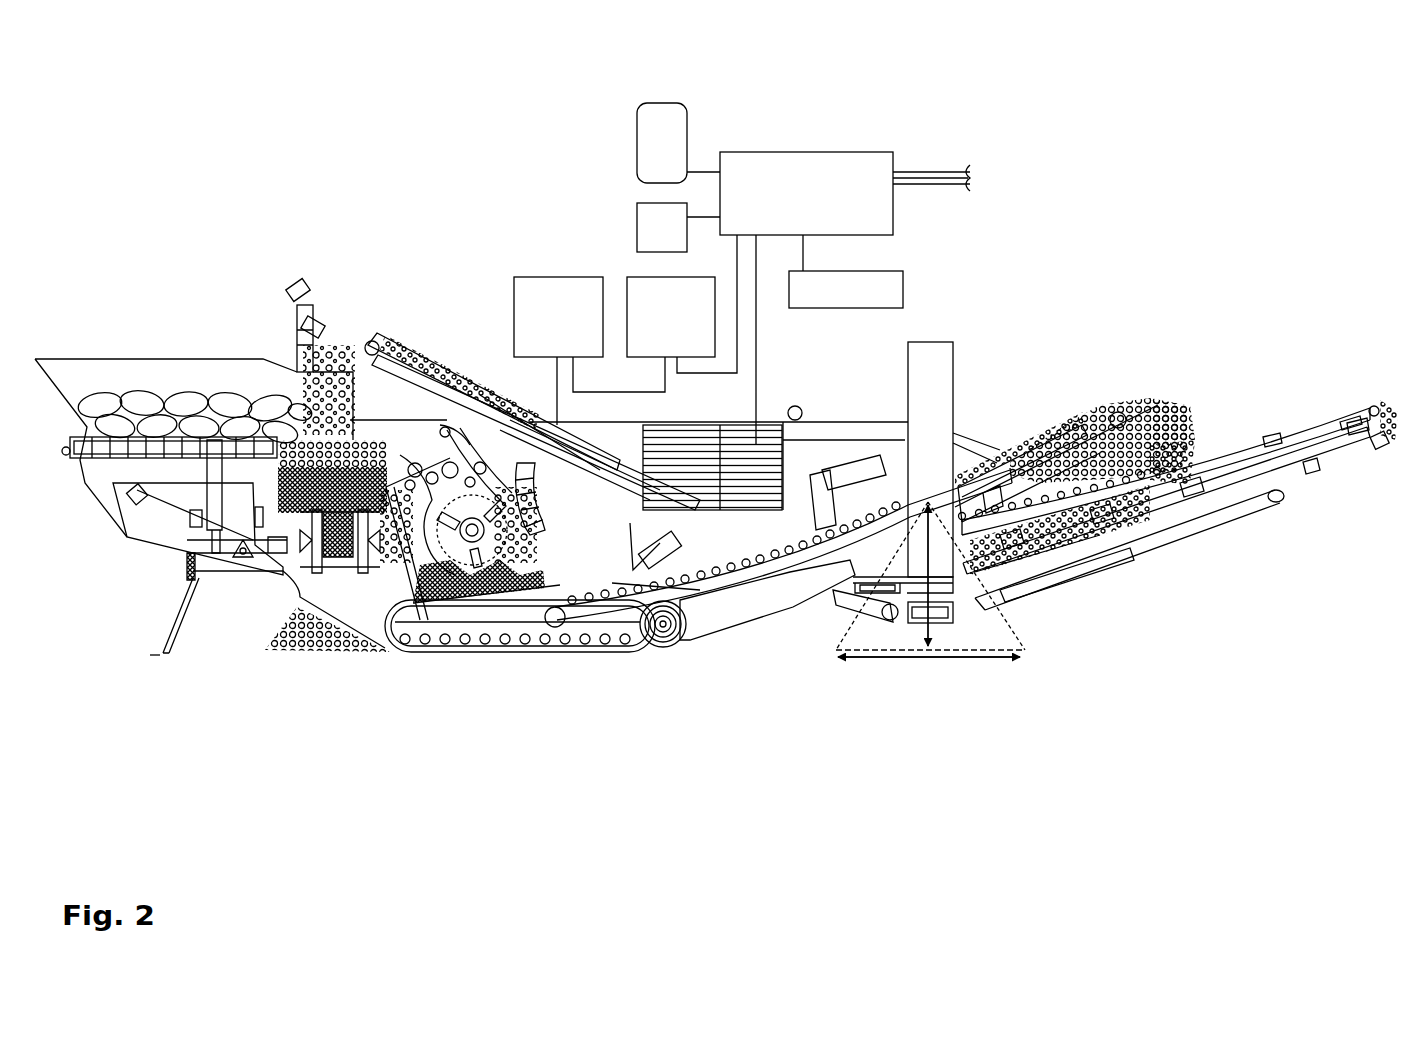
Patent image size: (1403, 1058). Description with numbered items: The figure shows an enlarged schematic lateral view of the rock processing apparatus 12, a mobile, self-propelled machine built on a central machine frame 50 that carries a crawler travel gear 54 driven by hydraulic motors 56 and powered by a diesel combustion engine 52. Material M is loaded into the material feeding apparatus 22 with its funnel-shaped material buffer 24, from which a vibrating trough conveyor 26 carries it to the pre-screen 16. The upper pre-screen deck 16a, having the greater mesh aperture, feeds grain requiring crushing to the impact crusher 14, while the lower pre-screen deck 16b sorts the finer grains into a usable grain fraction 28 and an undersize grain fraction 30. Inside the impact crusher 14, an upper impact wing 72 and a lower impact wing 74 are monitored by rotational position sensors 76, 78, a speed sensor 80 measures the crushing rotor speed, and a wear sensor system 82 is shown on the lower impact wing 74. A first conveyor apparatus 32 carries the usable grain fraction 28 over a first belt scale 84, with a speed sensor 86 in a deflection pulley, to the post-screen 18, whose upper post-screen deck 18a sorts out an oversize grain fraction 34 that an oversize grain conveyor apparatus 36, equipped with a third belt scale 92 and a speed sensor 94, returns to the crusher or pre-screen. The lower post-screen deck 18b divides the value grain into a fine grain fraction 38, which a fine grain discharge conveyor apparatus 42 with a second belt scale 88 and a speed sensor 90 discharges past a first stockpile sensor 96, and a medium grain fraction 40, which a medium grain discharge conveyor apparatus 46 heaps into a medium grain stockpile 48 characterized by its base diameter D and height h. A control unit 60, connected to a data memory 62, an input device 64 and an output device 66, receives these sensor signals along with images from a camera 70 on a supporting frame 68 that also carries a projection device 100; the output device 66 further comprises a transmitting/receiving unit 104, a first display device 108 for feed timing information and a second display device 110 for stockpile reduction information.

The rock processing apparatus 12 is at (424, 150).
The impact crusher 14 is at (450, 540).
The pre-screen 16 is at (345, 425).
The upper pre-screen deck 16a is at (278, 452).
The lower pre-screen deck 16b is at (278, 478).
The post-screen 18 is at (1183, 423).
The upper post-screen deck 18a is at (1190, 438).
The lower post-screen deck 18b is at (1185, 473).
The material feeding apparatus 22 is at (78, 440).
The material buffer 24 is at (110, 380).
The trough conveyor 26 is at (135, 452).
The usable grain fraction 28 is at (560, 568).
The undersize grain fraction 30 is at (278, 650).
The first conveyor apparatus 32 is at (1090, 430).
The oversize grain fraction 34 is at (458, 380).
The oversize grain conveyor apparatus 36 is at (545, 440).
The fine grain fraction 38 is at (1060, 540).
The medium grain fraction 40 is at (1027, 525).
The fine grain discharge conveyor apparatus 42 is at (1127, 537).
The medium grain discharge conveyor apparatus 46 is at (953, 370).
The medium grain stockpile 48 is at (985, 660).
The machine frame 50 is at (122, 510).
The diesel combustion engine 52 is at (755, 438).
The crawler travel gear 54 is at (518, 652).
The hydraulic motors 56 is at (665, 640).
The control unit 60 is at (806, 193).
The data memory 62 is at (846, 271).
The input device 64 is at (662, 143).
The output device 66 is at (555, 195).
The supporting frame 68 is at (315, 300).
The camera 70 is at (296, 280).
The upper impact wing 72 is at (487, 445).
The lower impact wing 74 is at (540, 440).
The rotational position sensor 76 is at (478, 425).
The rotational position sensor 78 is at (528, 470).
The speed sensor 80 is at (468, 540).
The wear sensor system 82 is at (545, 520).
The first belt scale 84 is at (1022, 457).
The speed sensor 86 is at (1118, 417).
The second belt scale 88 is at (1322, 435).
The speed sensor 90 is at (1372, 403).
The third belt scale 92 is at (398, 377).
The speed sensor 94 is at (888, 620).
The first stockpile sensor 96 is at (1372, 450).
The projection device 100 is at (297, 340).
The transmitting/receiving unit 104 is at (662, 227).
The first display device 108 is at (558, 317).
The second display device 110 is at (671, 317).
The material M is at (170, 393).
The height of the stockpile h is at (934, 500).
The diameter of the base area D is at (932, 660).